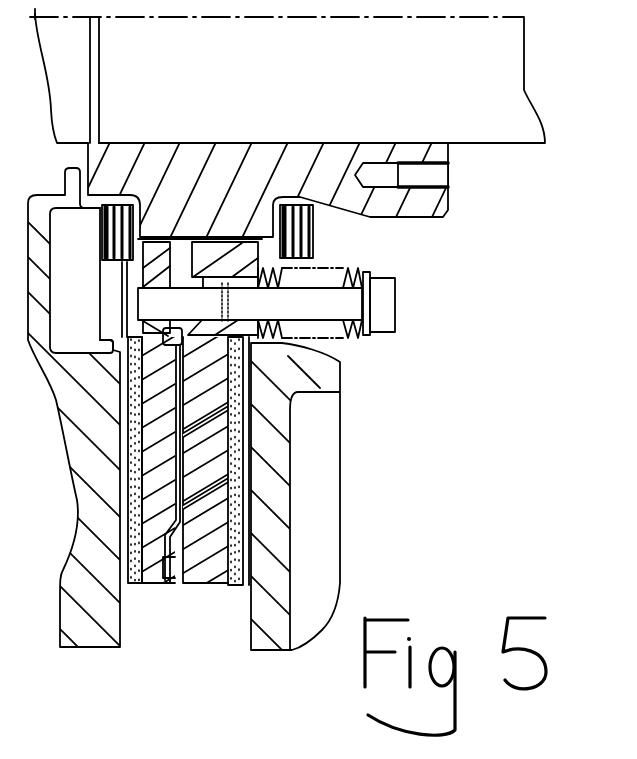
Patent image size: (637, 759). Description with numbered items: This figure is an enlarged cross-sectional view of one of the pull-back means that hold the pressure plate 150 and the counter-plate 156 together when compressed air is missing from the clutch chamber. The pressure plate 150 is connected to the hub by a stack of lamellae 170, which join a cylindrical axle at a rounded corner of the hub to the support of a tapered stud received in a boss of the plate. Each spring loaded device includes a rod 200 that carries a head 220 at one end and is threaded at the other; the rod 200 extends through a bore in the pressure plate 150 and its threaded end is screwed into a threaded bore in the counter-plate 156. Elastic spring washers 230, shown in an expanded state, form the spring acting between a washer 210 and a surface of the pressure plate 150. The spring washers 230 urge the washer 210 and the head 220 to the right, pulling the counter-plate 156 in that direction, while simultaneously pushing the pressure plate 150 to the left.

The pressure plate 150 is at (205, 433).
The counter-plate 156 is at (155, 473).
The stack of lamellae 170 is at (313, 227).
The rod 200 is at (309, 307).
The washer 210 is at (345, 270).
The head 220 is at (350, 278).
The spring washers 230 is at (348, 335).